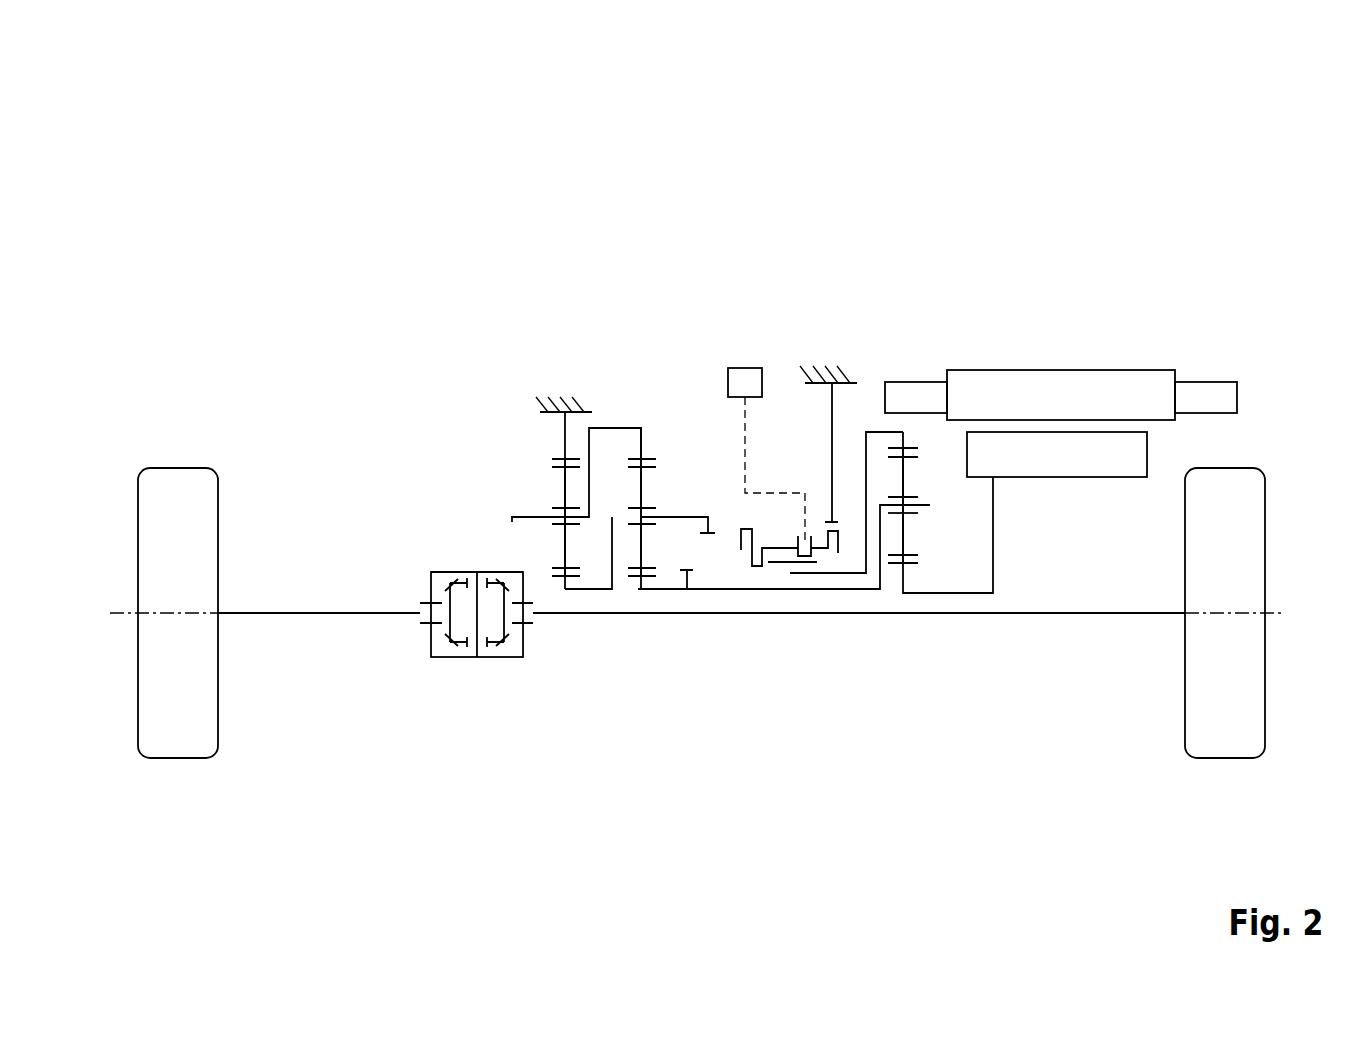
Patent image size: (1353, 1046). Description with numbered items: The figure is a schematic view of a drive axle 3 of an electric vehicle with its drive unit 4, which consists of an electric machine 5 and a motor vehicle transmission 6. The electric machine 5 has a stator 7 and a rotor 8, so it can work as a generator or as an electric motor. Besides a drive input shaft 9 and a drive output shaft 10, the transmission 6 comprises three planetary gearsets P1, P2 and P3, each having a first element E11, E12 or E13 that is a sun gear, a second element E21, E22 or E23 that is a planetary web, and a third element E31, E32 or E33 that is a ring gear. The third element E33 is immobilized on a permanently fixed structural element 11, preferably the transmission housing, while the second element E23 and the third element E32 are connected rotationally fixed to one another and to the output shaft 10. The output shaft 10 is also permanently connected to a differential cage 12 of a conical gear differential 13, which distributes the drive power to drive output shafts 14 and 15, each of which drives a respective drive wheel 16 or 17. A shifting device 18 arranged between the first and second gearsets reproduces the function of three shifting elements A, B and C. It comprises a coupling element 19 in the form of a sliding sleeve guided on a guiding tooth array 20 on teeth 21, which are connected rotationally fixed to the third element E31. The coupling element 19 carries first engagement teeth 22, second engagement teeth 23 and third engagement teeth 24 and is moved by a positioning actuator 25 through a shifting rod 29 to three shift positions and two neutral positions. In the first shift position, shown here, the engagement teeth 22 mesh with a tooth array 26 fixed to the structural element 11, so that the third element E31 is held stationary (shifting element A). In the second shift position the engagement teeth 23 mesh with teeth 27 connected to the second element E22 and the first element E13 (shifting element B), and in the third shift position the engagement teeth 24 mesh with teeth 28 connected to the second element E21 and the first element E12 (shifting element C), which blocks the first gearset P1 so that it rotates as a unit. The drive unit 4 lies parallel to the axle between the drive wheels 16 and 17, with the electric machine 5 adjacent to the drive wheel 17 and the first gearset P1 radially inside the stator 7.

The drive axle 3 is at (246, 194).
The drive unit 4 is at (679, 139).
The electric machine 5 is at (1056, 332).
The motor vehicle transmission 6 is at (600, 131).
The stator 7 is at (1067, 385).
The rotor 8 is at (1088, 457).
The drive input shaft 9 is at (973, 593).
The drive output shaft 10 is at (510, 524).
The structural element 11 is at (553, 397).
The differential cage 12 is at (455, 572).
The differential gear system 13 is at (458, 668).
The drive output shaft 14 is at (290, 613).
The drive output shaft 15 is at (1142, 613).
The drive wheel 16 is at (178, 503).
The drive wheel 17 is at (1227, 728).
The shifting device 18 is at (808, 557).
The coupling element 19 is at (780, 548).
The guiding tooth array 20 is at (837, 537).
The teeth 21 is at (777, 563).
The first engagement teeth 22 is at (862, 560).
The second engagement teeth 23 is at (748, 529).
The third engagement teeth 24 is at (760, 567).
The positioning actuator 25 is at (743, 368).
The tooth array 26 is at (827, 518).
The teeth 27 is at (711, 535).
The teeth 28 is at (681, 590).
The shifting rod 29 is at (742, 430).
The shifting element A is at (843, 520).
The shifting element B is at (721, 516).
The shifting element C is at (703, 578).
The first planetary gearset P1 is at (903, 637).
The second planetary gearset P2 is at (639, 637).
The third planetary gearset P3 is at (565, 637).
The first element E11 is at (906, 579).
The first element E12 is at (638, 589).
The first element E13 is at (565, 589).
The second element E21 is at (923, 508).
The second element E22 is at (610, 516).
The second element E23 is at (543, 510).
The third element E31 is at (906, 442).
The third element E32 is at (640, 442).
The third element E33 is at (563, 433).